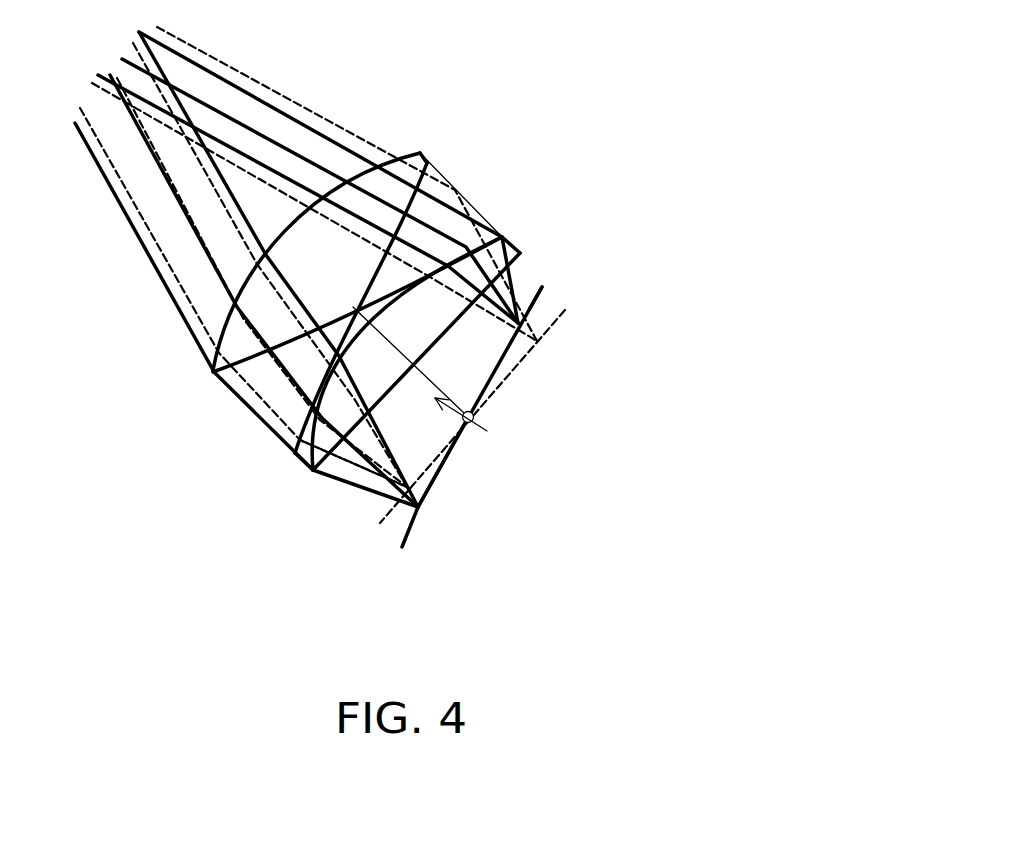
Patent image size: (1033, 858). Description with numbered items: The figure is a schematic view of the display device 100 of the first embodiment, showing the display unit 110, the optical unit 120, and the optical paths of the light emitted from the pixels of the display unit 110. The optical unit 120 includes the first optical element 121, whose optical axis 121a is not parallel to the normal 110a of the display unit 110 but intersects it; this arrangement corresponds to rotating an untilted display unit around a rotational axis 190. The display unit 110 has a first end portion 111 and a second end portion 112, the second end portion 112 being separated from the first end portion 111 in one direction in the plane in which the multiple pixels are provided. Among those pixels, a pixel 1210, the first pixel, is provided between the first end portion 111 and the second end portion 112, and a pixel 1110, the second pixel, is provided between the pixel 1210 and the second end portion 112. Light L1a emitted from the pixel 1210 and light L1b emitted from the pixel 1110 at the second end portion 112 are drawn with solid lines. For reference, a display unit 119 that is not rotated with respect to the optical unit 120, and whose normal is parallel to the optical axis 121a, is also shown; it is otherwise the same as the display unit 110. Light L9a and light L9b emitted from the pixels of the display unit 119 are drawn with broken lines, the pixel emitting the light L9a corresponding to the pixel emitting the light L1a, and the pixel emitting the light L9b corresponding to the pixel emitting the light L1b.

The optical system 100 is at (625, 120).
The optical unit 120 is at (577, 212).
The first optical element 121 is at (321, 319).
The optical axis 121a is at (407, 357).
The display unit 110 is at (555, 410).
The normal 110a is at (460, 405).
The first end portion 111 is at (543, 287).
The second end portion 112 is at (402, 547).
The pixel 1110 is at (425, 508).
The pixel 1210 is at (535, 335).
The rotational axis 190 is at (475, 418).
The display unit 119 is at (390, 508).
The light L1a is at (508, 297).
The light L1b is at (367, 450).
The light L9a is at (487, 327).
The light L9b is at (297, 455).